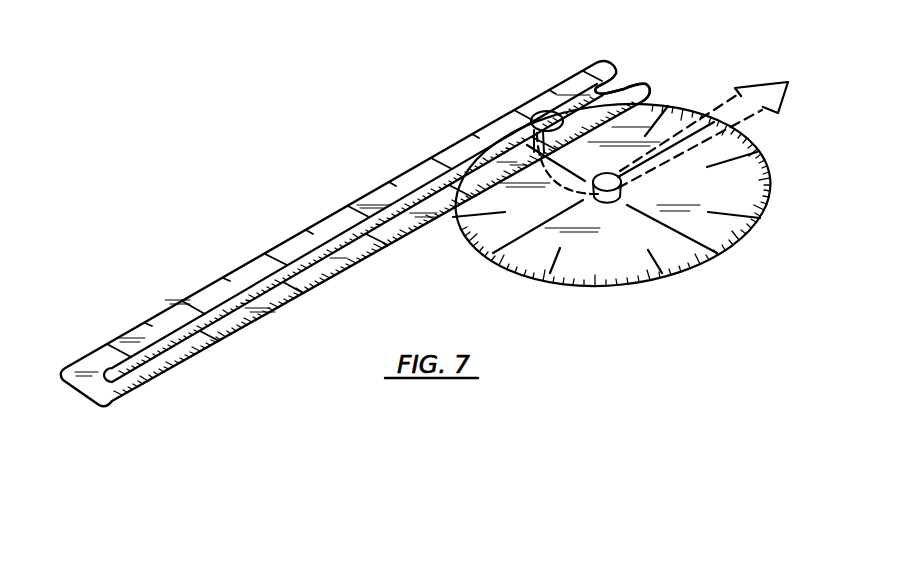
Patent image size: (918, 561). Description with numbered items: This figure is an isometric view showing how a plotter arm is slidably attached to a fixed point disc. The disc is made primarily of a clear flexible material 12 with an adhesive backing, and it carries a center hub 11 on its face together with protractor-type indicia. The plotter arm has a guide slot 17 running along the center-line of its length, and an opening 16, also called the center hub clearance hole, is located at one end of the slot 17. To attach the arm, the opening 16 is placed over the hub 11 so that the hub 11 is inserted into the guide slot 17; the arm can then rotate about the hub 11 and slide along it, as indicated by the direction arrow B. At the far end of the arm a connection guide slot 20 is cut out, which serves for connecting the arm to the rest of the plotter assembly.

The center hub 11 is at (612, 200).
The clear flexible material 12 is at (765, 185).
The opening 16 is at (535, 112).
The guide slot 17 is at (332, 238).
The connection guide slot 20 is at (634, 86).
The direction arrow B is at (720, 102).